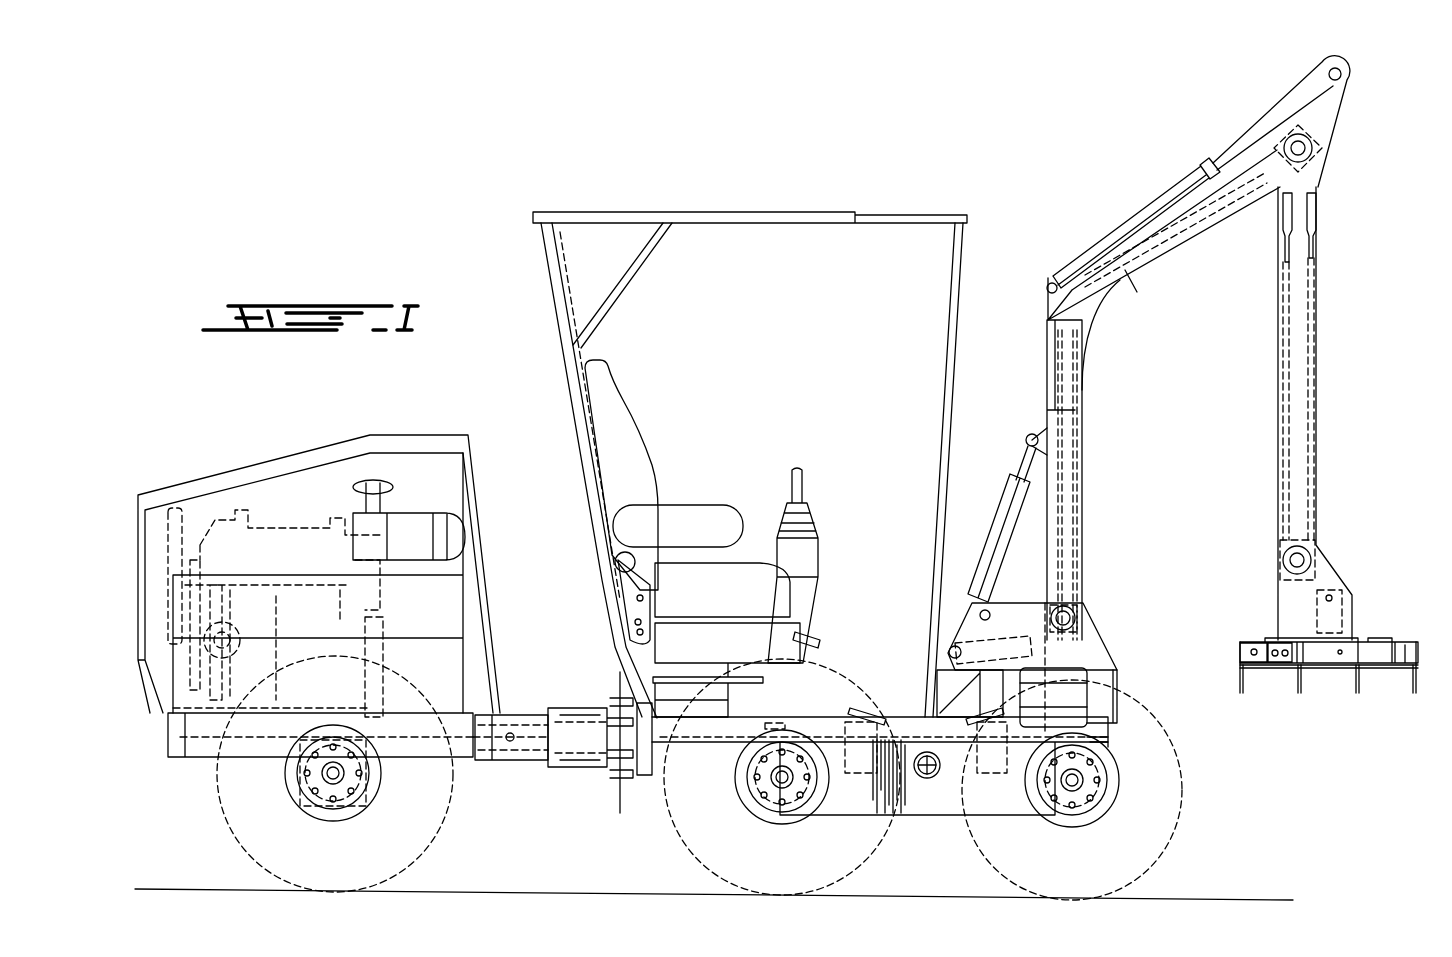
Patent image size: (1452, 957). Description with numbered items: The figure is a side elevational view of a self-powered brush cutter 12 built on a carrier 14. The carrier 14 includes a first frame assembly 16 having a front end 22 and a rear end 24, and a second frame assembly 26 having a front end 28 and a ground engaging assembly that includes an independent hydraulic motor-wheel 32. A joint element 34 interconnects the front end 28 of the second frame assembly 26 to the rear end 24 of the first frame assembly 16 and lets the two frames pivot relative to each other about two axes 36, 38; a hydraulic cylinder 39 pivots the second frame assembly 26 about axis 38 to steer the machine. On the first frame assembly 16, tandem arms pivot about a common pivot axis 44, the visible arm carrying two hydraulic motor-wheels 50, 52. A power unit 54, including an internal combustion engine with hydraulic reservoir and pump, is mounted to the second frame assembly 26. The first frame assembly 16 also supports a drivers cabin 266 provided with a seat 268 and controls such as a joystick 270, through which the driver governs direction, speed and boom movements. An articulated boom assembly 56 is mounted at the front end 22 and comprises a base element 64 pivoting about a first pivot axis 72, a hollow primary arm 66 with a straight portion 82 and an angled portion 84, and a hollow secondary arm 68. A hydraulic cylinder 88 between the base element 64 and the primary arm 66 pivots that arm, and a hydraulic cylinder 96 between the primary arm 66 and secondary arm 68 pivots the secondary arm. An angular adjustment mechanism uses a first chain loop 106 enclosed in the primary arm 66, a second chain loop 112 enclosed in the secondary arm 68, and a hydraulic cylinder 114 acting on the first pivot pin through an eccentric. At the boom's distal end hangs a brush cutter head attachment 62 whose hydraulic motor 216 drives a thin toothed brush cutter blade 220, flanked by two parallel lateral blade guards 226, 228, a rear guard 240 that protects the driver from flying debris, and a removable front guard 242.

The self-powered brush cutter 12 is at (1015, 240).
The carrier 14 is at (478, 278).
The first frame assembly 16 is at (820, 712).
The front end 22 is at (1112, 738).
The rear end 24 is at (688, 770).
The second frame assembly 26 is at (435, 762).
The front end 28 is at (474, 760).
The hydraulic motor-wheel 32 is at (420, 856).
The joint element 34 is at (600, 772).
The axis 36 is at (500, 762).
The axis 38 is at (613, 677).
The hydraulic cylinder 39 is at (712, 745).
The common pivot axis 44 is at (932, 780).
The hydraulic motor-wheel 50 is at (1100, 836).
The hydraulic motor-wheel 52 is at (792, 830).
The power unit 54 is at (282, 495).
The articulated boom assembly 56 is at (1034, 336).
The brush cutter head attachment 62 is at (1378, 608).
The base element 64 is at (1122, 674).
The primary arm 66 is at (1086, 445).
The secondary arm 68 is at (1318, 420).
The first pivot axis 72 is at (1085, 656).
The straight portion 82 is at (1085, 500).
The angled portion 84 is at (1190, 250).
The hydraulic cylinder 88 is at (1003, 520).
The hydraulic cylinder 96 is at (1160, 207).
The first chain loop 106 is at (1080, 481).
The second chain loop 112 is at (1320, 350).
The hydraulic cylinder 114 is at (955, 600).
The hydraulic motor 216 is at (1312, 610).
The brush cutter blade 220 is at (1378, 668).
The lateral blade guard 226 is at (1357, 693).
The lateral blade guard 228 is at (1298, 693).
The rear guard 240 is at (1240, 692).
The front guard 242 is at (1416, 693).
The drivers cabin 266 is at (755, 211).
The seat 268 is at (650, 436).
The joystick 270 is at (820, 508).